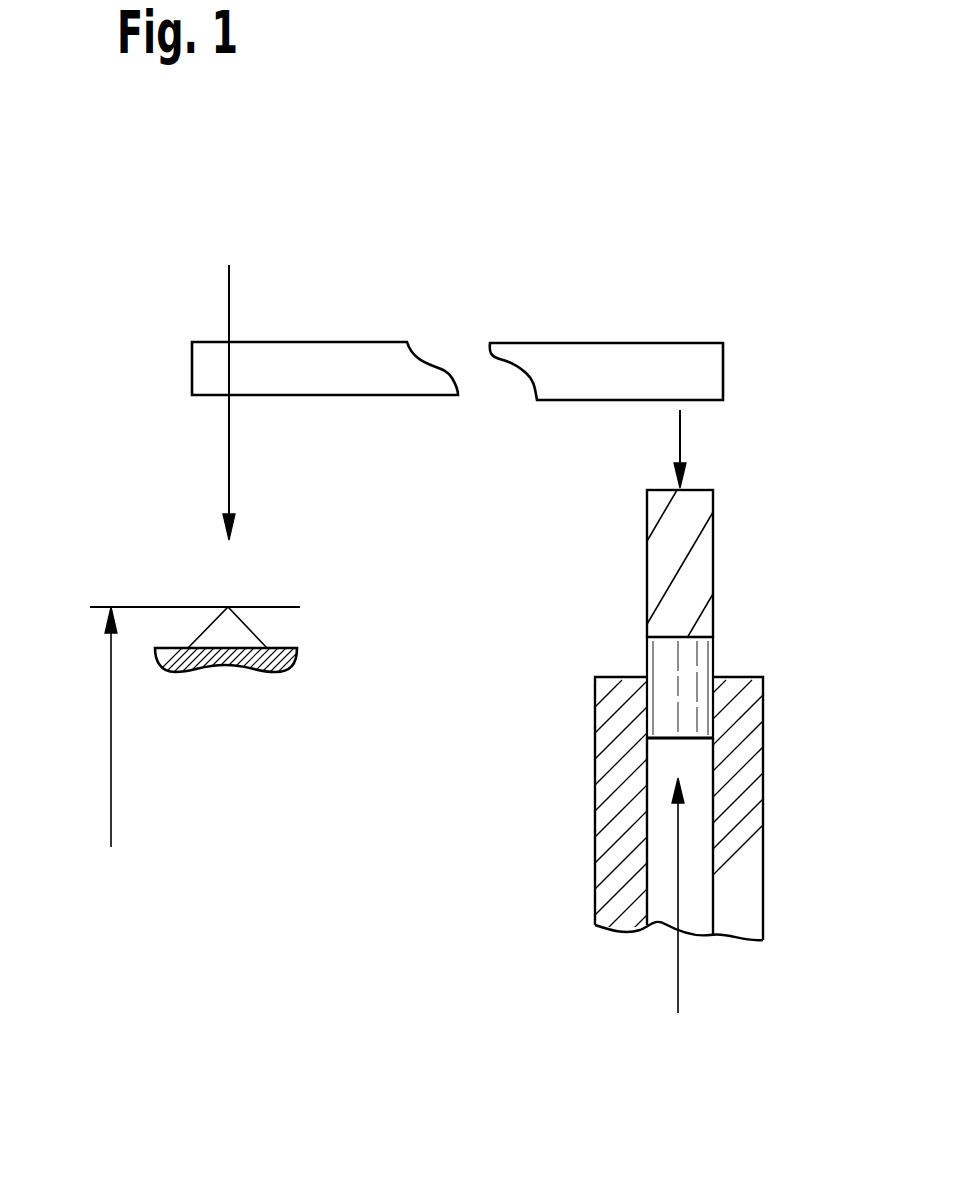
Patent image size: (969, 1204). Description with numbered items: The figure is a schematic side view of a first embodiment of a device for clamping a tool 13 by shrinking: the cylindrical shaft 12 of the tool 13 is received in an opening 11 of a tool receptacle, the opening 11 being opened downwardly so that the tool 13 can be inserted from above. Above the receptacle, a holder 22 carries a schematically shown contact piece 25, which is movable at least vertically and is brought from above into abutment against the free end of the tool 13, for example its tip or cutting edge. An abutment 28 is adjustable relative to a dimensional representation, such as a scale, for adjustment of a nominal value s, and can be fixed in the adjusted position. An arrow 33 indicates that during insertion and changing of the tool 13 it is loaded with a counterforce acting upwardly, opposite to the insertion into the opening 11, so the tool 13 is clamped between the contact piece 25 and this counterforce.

The opening 11 is at (663, 843).
The cylindrical shaft 12 is at (688, 705).
The tool 13 is at (693, 577).
The holder 22 is at (373, 365).
The contact piece 25 is at (680, 442).
The abutment 28 is at (232, 632).
The arrow 33 is at (680, 860).
The nominal value s is at (110, 755).